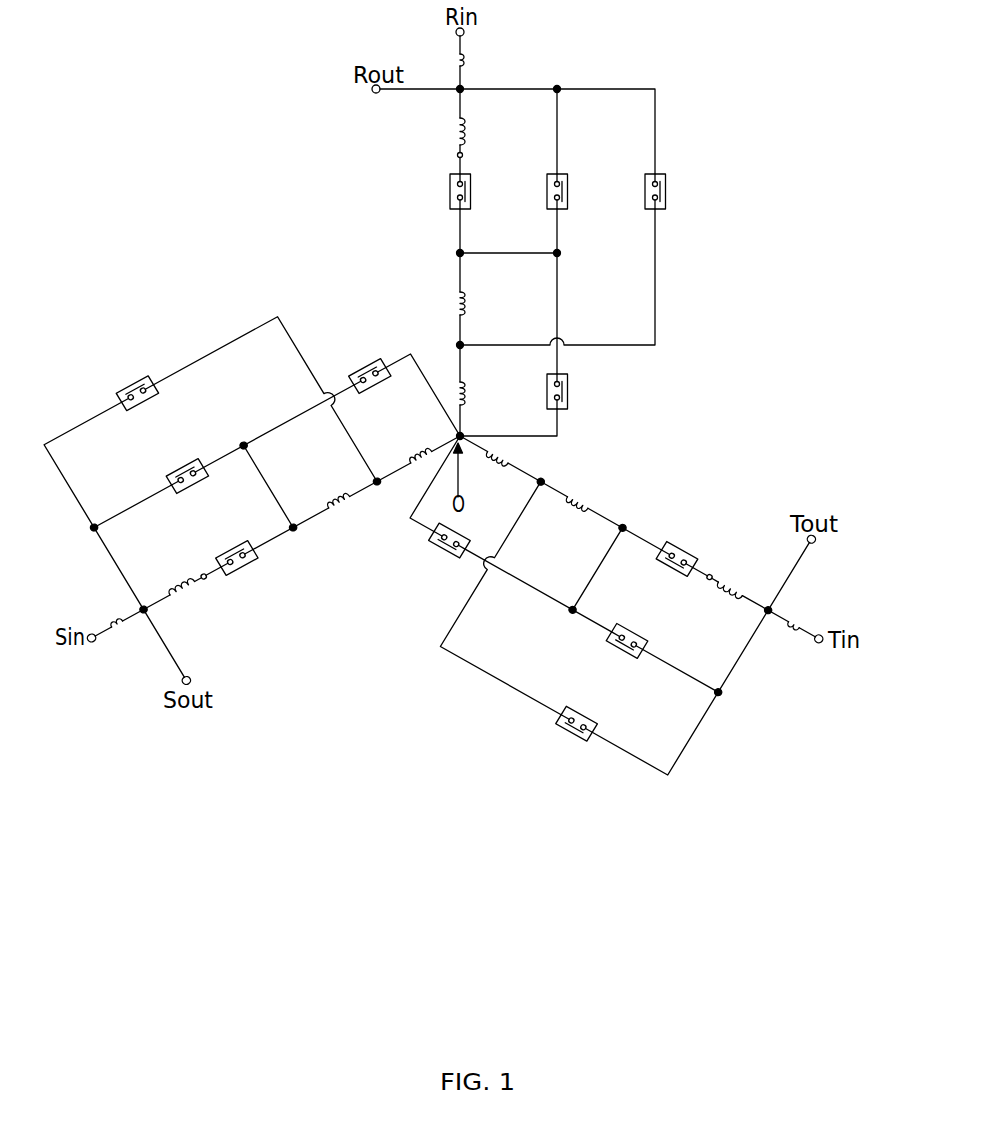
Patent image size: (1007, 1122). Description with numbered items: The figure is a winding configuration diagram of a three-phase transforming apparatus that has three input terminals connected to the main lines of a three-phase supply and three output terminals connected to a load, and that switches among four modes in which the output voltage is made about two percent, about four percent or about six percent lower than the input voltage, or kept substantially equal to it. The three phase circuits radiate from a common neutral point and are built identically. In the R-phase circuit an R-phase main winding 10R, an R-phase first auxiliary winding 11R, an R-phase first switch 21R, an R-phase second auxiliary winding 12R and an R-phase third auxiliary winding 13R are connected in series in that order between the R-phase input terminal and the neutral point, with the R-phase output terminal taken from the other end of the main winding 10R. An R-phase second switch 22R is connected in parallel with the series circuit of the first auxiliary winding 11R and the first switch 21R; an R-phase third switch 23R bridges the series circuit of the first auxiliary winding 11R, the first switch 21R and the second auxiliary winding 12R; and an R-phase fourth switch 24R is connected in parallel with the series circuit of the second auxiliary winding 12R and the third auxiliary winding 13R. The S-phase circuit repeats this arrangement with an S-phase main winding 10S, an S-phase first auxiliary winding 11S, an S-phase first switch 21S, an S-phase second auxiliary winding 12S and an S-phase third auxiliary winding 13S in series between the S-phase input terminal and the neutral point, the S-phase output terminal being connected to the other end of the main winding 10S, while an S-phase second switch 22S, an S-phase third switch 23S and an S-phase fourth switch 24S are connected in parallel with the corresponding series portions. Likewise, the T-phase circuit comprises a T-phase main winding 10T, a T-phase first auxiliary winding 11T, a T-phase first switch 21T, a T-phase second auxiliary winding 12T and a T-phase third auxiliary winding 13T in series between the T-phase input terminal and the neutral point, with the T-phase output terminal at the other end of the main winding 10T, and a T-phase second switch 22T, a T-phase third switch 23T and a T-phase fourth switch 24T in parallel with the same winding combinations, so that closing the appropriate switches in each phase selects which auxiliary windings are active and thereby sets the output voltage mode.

The R-phase main winding 10R is at (484, 60).
The R-phase first auxiliary winding 11R is at (482, 133).
The R-phase second auxiliary winding 12R is at (482, 304).
The R-phase third auxiliary winding 13R is at (482, 396).
The R-phase first switch 21R is at (495, 192).
The R-phase second switch 22R is at (593, 192).
The R-phase third switch 23R is at (691, 192).
The R-phase fourth switch 24R is at (587, 391).
The S-phase main winding 10S is at (110, 610).
The S-phase first auxiliary winding 11S is at (173, 575).
The S-phase second auxiliary winding 12S is at (329, 490).
The S-phase third auxiliary winding 13S is at (413, 444).
The S-phase first switch 21S is at (220, 536).
The S-phase second switch 22S is at (172, 452).
The S-phase third switch 23S is at (123, 371).
The S-phase fourth switch 24S is at (359, 352).
The T-phase main winding 10T is at (788, 642).
The T-phase first auxiliary winding 11T is at (723, 603).
The T-phase second auxiliary winding 12T is at (568, 518).
The T-phase third auxiliary winding 13T is at (489, 474).
The T-phase first switch 21T is at (653, 577).
The T-phase second switch 22T is at (604, 659).
The T-phase third switch 23T is at (548, 735).
The T-phase fourth switch 24T is at (434, 560).